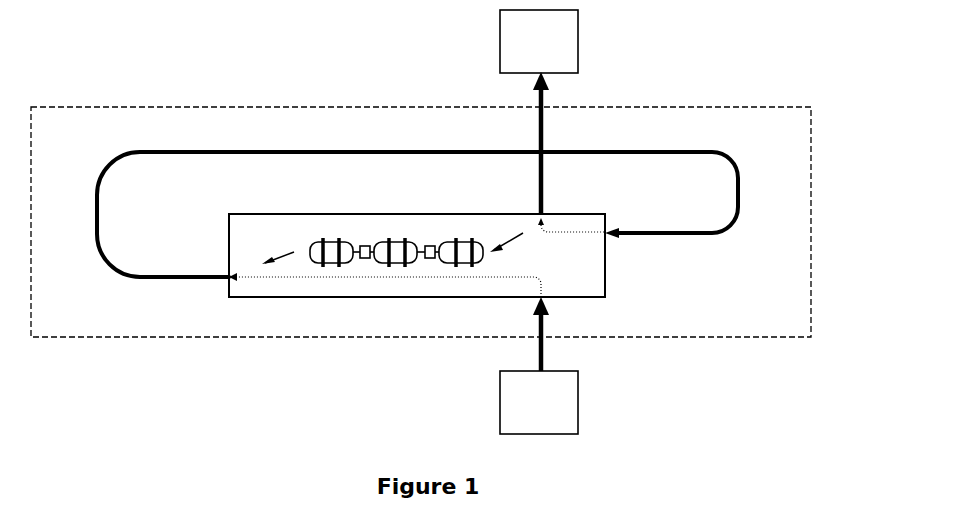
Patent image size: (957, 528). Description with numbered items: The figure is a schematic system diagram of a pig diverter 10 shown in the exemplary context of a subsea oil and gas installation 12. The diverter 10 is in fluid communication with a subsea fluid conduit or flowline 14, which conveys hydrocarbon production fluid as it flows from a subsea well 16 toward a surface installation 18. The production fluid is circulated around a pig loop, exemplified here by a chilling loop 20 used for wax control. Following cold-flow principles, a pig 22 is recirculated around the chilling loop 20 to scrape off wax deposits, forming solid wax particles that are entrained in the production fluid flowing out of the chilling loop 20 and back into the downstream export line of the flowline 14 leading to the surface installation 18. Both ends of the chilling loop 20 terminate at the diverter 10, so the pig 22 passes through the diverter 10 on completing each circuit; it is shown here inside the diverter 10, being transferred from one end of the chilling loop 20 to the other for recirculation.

The pig diverter 10 is at (243, 212).
The subsea oil and gas installation 12 is at (237, 104).
The subsea fluid conduit or flowline 14 is at (538, 188).
The subsea well 16 is at (567, 402).
The surface installation 18 is at (567, 39).
The chilling loop 20 is at (110, 158).
The pig 22 is at (380, 248).